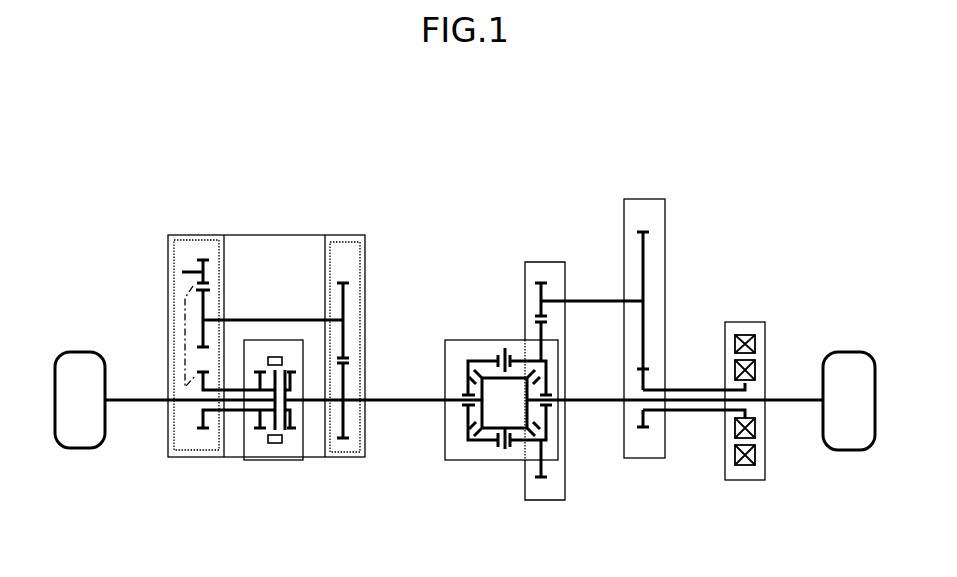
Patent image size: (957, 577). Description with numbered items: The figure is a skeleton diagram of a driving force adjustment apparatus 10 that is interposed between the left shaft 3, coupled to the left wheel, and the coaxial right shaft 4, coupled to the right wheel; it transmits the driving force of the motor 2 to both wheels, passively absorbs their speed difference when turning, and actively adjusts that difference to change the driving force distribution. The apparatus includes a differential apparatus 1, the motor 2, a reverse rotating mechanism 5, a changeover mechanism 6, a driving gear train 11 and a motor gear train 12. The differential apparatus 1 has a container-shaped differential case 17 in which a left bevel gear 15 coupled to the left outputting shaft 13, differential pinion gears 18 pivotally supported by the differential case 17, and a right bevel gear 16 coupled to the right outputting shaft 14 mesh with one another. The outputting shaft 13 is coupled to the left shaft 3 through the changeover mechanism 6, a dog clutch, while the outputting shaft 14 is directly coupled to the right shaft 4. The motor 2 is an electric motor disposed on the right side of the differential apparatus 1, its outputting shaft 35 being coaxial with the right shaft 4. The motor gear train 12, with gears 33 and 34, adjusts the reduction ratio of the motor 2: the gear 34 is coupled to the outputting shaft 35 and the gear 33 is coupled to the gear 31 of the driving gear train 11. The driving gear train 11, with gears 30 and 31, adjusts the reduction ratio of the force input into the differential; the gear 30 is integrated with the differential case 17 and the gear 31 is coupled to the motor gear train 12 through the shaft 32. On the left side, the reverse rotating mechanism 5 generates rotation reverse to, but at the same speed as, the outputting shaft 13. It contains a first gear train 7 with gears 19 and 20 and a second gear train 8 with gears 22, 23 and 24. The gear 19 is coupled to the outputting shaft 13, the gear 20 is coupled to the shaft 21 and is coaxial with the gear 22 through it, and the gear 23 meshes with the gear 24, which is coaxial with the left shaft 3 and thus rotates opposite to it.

The driving force adjustment apparatus 10 is at (156, 161).
The differential apparatus 1 is at (461, 339).
The motor 2 is at (746, 321).
The left shaft 3 is at (136, 397).
The right shaft 4 is at (791, 397).
The reverse rotating mechanism 5 is at (276, 235).
The changeover mechanism 6 is at (274, 462).
The first gear train 7 is at (346, 237).
The second gear train 8 is at (197, 235).
The driving gear train 11 is at (544, 261).
The motor gear train 12 is at (645, 198).
The outputting shaft 13 is at (410, 397).
The outputting shaft 14 is at (584, 397).
The left bevel gear 15 is at (481, 418).
The right bevel gear 16 is at (527, 416).
The differential case 17 is at (478, 442).
The differential pinion gears 18 is at (491, 367).
The gear 19 is at (346, 420).
The gear 20 is at (346, 300).
The shaft 21 is at (301, 320).
The gear 22 is at (207, 291).
The gear 23 is at (207, 265).
The gear 24 is at (200, 416).
The gear 30 is at (545, 329).
The gear 31 is at (536, 288).
The shaft 32 is at (596, 300).
The gear 33 is at (647, 270).
The gear 34 is at (647, 418).
The outputting shaft 35 is at (696, 389).